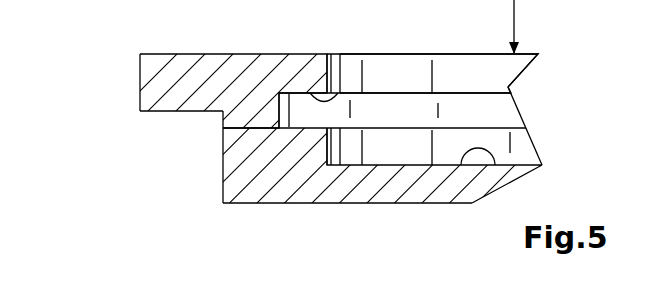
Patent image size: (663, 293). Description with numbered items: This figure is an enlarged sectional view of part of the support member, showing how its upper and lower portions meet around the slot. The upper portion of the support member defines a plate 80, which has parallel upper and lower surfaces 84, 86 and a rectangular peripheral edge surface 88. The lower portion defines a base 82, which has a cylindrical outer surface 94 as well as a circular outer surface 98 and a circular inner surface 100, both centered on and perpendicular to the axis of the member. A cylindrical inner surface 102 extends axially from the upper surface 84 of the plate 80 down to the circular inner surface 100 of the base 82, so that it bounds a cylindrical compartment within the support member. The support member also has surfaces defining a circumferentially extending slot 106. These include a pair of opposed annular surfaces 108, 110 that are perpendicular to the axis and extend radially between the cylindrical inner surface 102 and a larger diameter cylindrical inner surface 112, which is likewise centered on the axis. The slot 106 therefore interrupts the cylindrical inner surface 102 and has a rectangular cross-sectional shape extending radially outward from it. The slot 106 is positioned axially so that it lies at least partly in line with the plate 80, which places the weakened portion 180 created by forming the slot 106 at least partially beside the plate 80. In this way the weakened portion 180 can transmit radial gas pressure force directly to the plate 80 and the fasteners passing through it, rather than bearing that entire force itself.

The plate 80 is at (178, 68).
The base 82 is at (270, 182).
The upper surface 84 is at (243, 53).
The lower surface 86 is at (165, 112).
The rectangular peripheral edge surface 88 is at (141, 78).
The cylindrical outer surface 94 is at (223, 179).
The circular outer surface 98 is at (368, 204).
The circular inner surface 100 is at (463, 158).
The cylindrical inner surface 102 is at (455, 70).
The slot 106 is at (480, 115).
The annular surface 108 is at (343, 88).
The annular surface 110 is at (307, 128).
The larger diameter cylindrical inner surface 112 is at (283, 100).
The weakened portion 180 is at (257, 117).